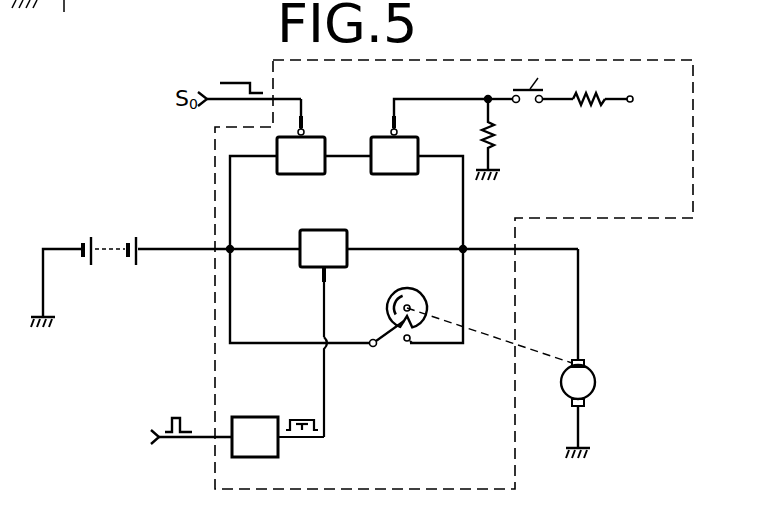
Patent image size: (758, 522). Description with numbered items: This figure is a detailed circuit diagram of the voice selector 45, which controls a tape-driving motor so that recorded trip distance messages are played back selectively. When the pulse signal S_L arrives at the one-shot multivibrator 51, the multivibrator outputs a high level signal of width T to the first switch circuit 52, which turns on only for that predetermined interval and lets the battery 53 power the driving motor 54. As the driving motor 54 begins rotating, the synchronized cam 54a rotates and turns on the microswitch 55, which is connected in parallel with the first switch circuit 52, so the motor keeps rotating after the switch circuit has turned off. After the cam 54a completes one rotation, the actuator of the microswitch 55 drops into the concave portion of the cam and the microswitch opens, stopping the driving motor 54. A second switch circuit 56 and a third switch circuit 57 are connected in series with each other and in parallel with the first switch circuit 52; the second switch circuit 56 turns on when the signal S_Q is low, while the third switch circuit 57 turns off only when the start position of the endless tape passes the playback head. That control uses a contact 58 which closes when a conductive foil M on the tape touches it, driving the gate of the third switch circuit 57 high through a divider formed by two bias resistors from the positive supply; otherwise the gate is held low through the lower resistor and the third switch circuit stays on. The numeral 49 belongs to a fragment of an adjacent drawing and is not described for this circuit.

The voice selector 45 is at (575, 55).
The detector circuit 49 is at (42, 21).
The one-shot multivibrator 51 is at (253, 457).
The first switch circuit 52 is at (322, 230).
The battery 53 is at (110, 258).
The driving motor 54 is at (595, 386).
The cam 54a is at (389, 308).
The microswitch 55 is at (395, 348).
The second switch circuit 56 is at (297, 174).
The third switch circuit 57 is at (392, 174).
The contact 58 is at (527, 103).